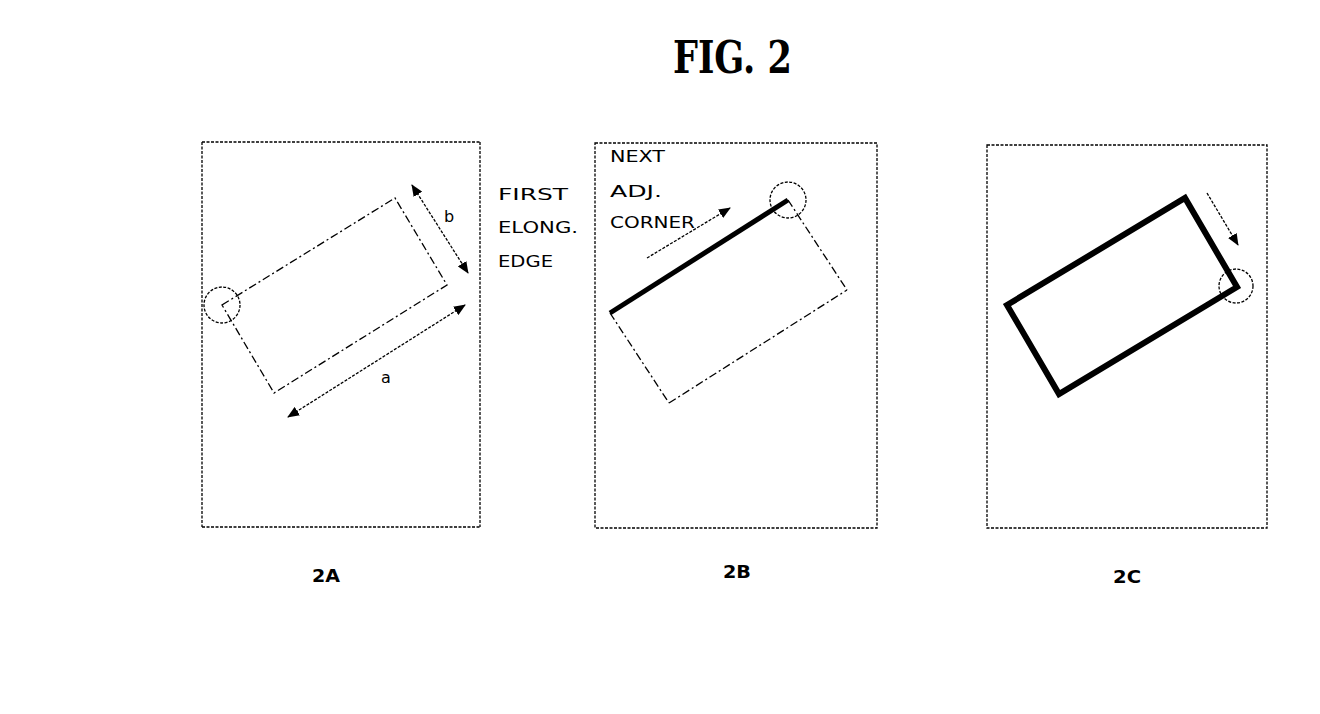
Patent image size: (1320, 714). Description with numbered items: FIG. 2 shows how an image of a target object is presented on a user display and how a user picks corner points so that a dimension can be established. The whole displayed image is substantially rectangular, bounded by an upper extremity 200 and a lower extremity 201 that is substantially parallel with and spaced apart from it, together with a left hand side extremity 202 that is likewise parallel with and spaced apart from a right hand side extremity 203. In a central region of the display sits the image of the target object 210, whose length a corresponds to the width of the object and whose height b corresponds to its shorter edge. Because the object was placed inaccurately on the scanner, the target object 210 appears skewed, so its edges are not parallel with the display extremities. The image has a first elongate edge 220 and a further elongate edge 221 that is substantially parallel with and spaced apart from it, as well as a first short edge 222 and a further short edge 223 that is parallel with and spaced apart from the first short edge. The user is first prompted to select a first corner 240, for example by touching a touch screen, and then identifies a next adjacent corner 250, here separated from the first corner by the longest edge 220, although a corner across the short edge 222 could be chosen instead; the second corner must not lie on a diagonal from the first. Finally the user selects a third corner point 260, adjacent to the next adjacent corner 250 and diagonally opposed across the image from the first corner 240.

The upper extremity 200 is at (309, 142).
The lower extremity 201 is at (402, 527).
The left hand side extremity 202 is at (202, 424).
The right hand side extremity 203 is at (513, 497).
The target object image 210 is at (355, 301).
The first elongate edge 220 is at (632, 298).
The further elongate edge 221 is at (725, 375).
The first short edge 222 is at (645, 375).
The further short edge 223 is at (826, 250).
The first corner 240 is at (218, 290).
The next adjacent corner 250 is at (773, 190).
The third corner point 260 is at (1237, 303).